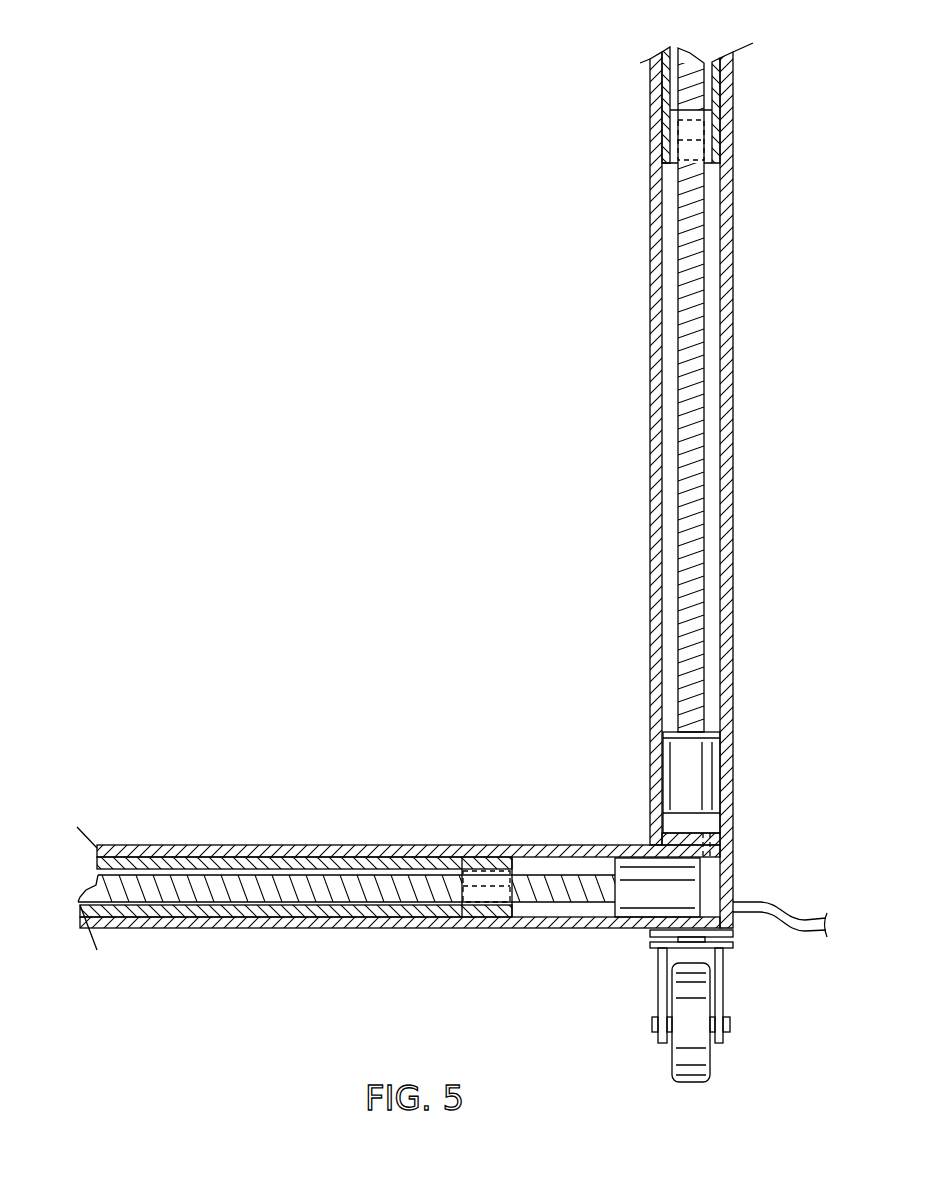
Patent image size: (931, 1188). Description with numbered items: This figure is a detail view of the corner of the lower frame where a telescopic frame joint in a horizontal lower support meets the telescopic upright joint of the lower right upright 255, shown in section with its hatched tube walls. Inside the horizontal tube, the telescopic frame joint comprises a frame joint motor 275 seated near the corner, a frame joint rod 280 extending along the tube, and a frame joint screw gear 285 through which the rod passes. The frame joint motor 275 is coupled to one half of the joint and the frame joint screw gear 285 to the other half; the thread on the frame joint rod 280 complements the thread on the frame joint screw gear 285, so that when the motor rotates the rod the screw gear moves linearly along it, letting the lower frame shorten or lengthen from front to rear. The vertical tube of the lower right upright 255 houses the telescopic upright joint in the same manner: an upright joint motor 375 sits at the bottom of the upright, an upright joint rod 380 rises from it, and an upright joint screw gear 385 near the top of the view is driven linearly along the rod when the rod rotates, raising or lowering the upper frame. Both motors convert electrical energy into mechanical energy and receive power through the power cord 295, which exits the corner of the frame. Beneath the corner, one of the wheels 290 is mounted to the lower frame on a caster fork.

The lower right upright 255 is at (733, 366).
The frame joint motor 275 is at (635, 898).
The frame joint rod 280 is at (290, 885).
The frame joint screw gear 285 is at (470, 880).
The wheel 290 is at (688, 1065).
The power cord 295 is at (768, 912).
The upright joint motor 375 is at (696, 768).
The upright joint rod 380 is at (697, 500).
The upright joint screw gear 385 is at (698, 133).